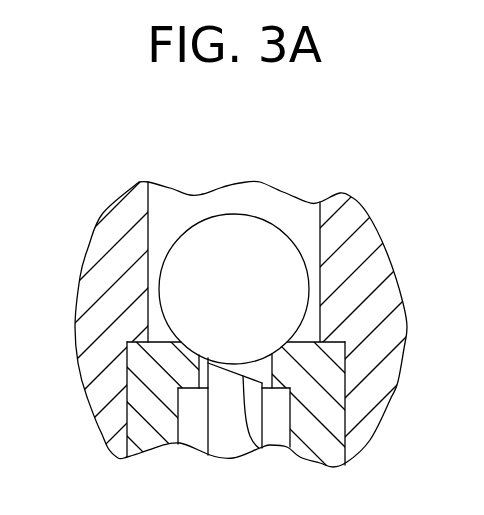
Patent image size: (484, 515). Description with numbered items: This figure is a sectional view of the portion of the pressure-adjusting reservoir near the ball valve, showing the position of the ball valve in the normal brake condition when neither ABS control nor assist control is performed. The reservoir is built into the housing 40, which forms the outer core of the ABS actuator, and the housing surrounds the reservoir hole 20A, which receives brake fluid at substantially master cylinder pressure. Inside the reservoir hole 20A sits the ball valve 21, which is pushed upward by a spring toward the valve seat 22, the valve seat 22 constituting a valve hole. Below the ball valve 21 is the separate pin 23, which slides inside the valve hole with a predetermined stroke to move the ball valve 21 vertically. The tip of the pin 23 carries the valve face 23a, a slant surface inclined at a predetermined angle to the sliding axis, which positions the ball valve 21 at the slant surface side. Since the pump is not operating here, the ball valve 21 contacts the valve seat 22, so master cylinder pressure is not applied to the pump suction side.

The housing 40 is at (118, 256).
The reservoir hole 20A is at (198, 204).
The ball valve 21 is at (265, 253).
The valve seat 22 is at (165, 362).
The pin 23 is at (225, 440).
The valve face 23a is at (250, 442).